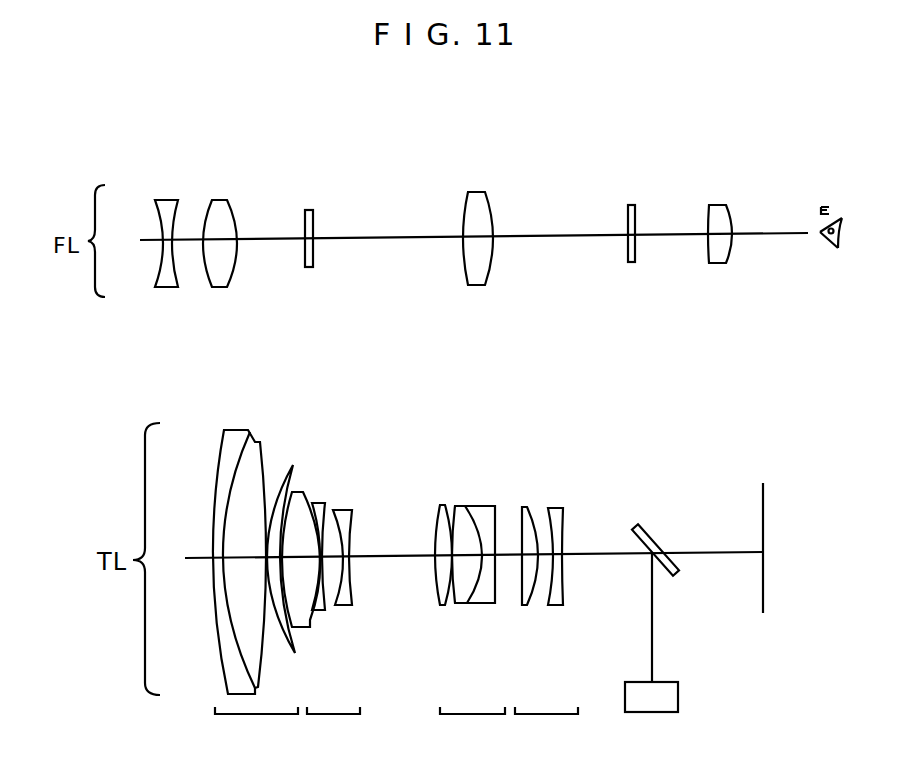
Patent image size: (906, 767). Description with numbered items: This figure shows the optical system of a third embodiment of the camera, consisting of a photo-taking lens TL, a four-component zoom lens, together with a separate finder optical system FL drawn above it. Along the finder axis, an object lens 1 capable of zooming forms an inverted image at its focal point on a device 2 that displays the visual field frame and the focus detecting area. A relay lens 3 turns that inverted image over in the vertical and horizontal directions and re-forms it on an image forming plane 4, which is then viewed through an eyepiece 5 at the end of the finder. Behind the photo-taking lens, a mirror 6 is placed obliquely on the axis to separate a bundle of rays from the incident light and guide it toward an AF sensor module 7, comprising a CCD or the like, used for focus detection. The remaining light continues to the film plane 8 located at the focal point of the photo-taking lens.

The object lens 1 is at (233, 181).
The device for displaying a visual field frame and the focus detecting area 2 is at (310, 208).
The relay lens 3 is at (490, 212).
The image forming plane 4 is at (630, 205).
The eyepiece 5 is at (723, 205).
The mirror 6 is at (657, 541).
The AF sensor module 7 is at (678, 690).
The image plane 8 is at (757, 597).